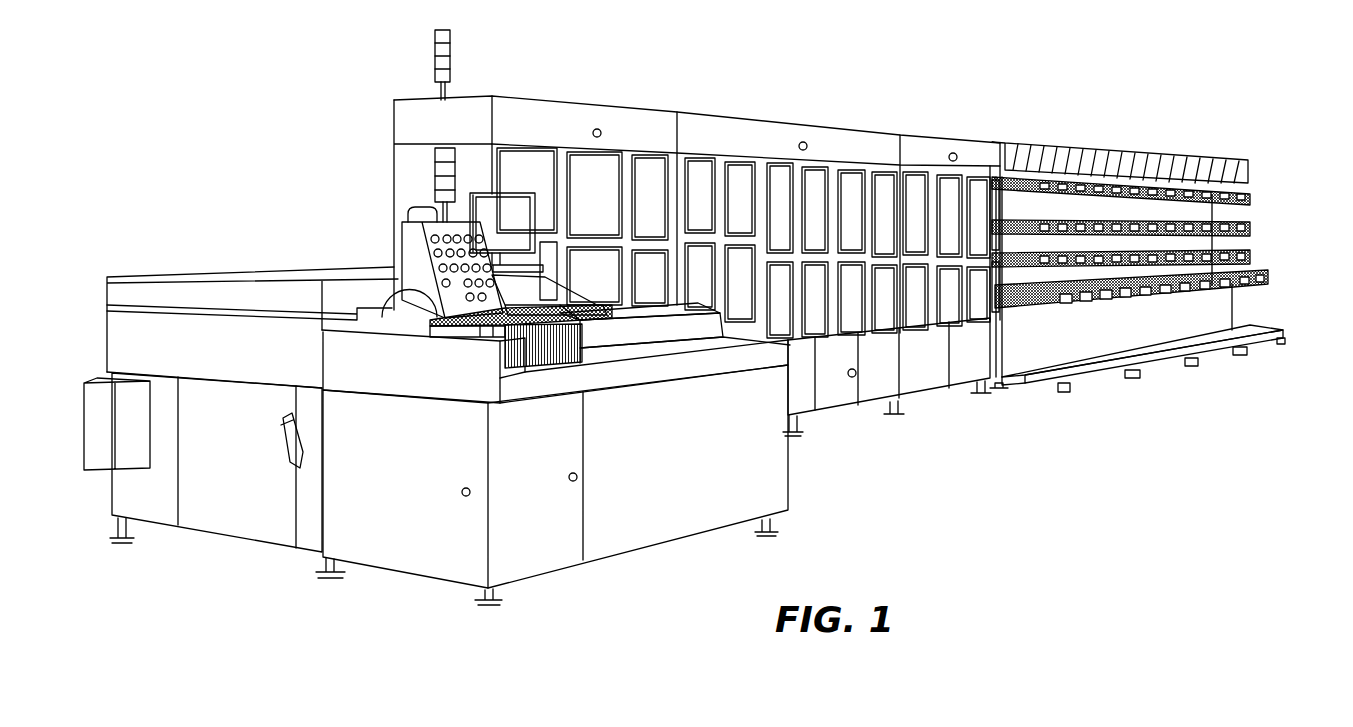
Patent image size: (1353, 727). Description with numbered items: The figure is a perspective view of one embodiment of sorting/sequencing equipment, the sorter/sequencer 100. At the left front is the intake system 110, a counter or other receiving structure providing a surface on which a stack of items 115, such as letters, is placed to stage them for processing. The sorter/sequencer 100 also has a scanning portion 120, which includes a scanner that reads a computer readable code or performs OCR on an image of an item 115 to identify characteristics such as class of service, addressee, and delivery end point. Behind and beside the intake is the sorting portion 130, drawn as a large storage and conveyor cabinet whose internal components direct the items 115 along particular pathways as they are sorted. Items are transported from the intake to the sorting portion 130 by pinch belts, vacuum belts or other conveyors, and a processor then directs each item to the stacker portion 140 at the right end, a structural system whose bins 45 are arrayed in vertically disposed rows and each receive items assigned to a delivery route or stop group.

The sorter/sequencer 100 is at (1185, 52).
The intake system 110 is at (692, 354).
The items 115 is at (565, 352).
The scanning portion 120 is at (397, 364).
The sorting portion 130 is at (758, 104).
The stacker portion 140 is at (1107, 137).
The shelves 45 is at (1252, 252).